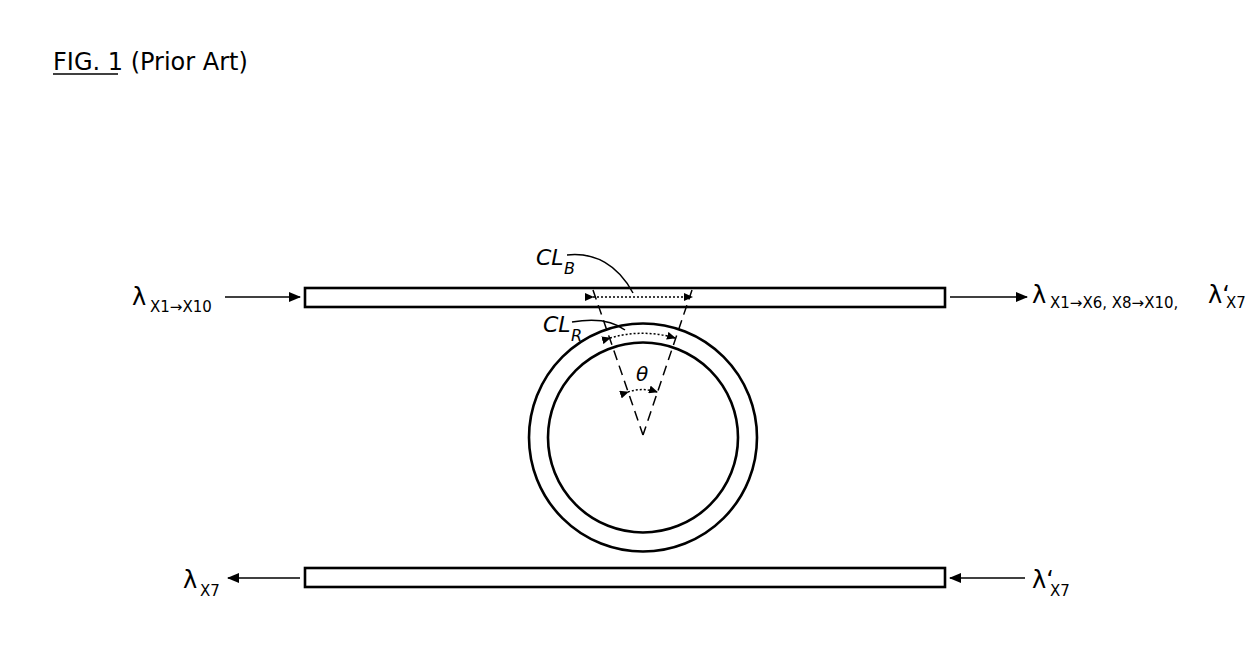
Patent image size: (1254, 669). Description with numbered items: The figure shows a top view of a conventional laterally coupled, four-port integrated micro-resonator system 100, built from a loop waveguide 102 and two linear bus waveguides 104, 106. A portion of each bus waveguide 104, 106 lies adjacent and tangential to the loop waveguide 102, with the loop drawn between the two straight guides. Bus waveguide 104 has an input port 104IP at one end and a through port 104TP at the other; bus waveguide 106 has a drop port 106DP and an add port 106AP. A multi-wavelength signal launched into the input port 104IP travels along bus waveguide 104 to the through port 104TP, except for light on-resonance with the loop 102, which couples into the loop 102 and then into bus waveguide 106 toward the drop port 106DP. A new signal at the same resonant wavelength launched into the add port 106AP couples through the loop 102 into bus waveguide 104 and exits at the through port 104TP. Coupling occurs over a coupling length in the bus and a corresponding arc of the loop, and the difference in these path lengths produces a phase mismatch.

The four-port micro-resonator system 100 is at (779, 186).
The loop waveguide 102 is at (540, 442).
The bus waveguide 104 is at (465, 295).
The bus waveguide 106 is at (475, 585).
The input port 104IP is at (304, 335).
The through port 104TP is at (949, 335).
The drop port 106DP is at (310, 619).
The add port 106AP is at (961, 619).